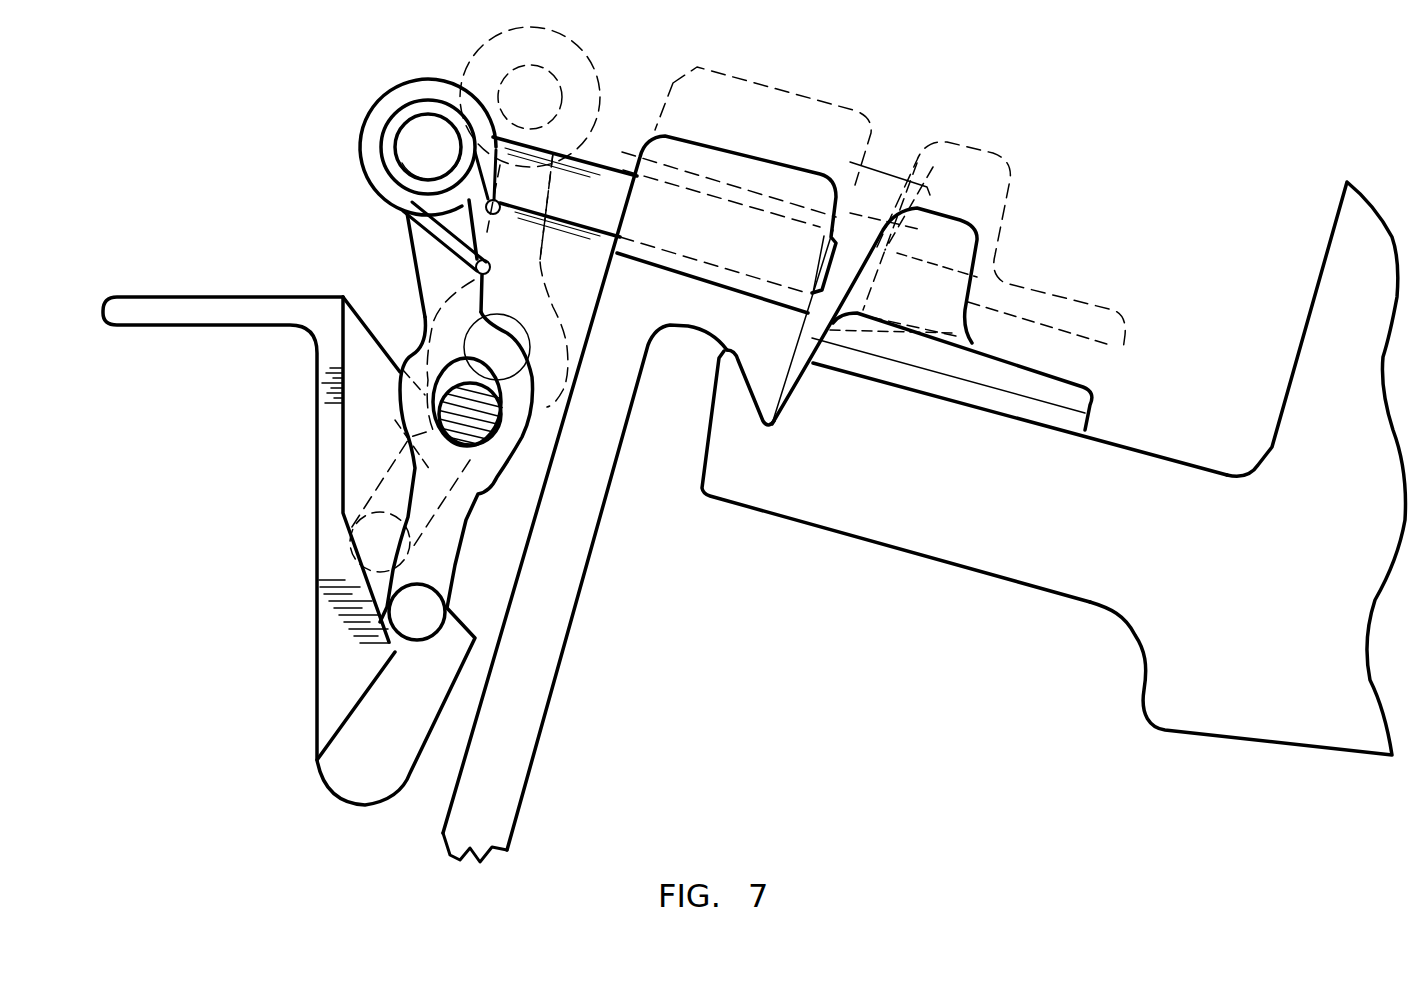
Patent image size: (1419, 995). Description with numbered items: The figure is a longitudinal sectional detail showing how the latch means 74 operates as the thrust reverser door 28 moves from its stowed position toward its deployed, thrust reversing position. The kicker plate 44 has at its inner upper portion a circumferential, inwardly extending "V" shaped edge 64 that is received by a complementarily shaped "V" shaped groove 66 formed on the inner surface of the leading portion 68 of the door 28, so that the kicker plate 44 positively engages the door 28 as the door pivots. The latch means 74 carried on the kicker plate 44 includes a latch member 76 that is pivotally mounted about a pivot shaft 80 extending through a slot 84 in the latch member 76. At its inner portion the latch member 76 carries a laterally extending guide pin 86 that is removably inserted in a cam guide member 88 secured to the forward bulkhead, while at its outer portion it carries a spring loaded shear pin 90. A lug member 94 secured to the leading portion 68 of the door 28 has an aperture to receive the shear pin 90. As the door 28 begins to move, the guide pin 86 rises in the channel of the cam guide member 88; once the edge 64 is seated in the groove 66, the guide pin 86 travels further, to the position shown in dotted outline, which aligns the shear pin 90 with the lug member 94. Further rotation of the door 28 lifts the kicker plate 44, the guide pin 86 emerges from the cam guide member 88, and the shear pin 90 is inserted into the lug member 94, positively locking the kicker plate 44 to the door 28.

The thrust reverser door 28 is at (1235, 742).
The kicker plate 44 is at (563, 653).
The "V" shaped edge 64 is at (747, 381).
The "V" shaped groove 66 is at (792, 383).
The leading portion 68 is at (867, 540).
The latch means 74 is at (246, 391).
The latch member 76 is at (410, 248).
The pivot shaft 80 is at (482, 492).
The slot 84 is at (538, 396).
The guide pin 86 is at (427, 642).
The cam guide member 88 is at (313, 522).
The spring loaded shear pin 90 is at (565, 225).
The lug member 94 is at (983, 233).